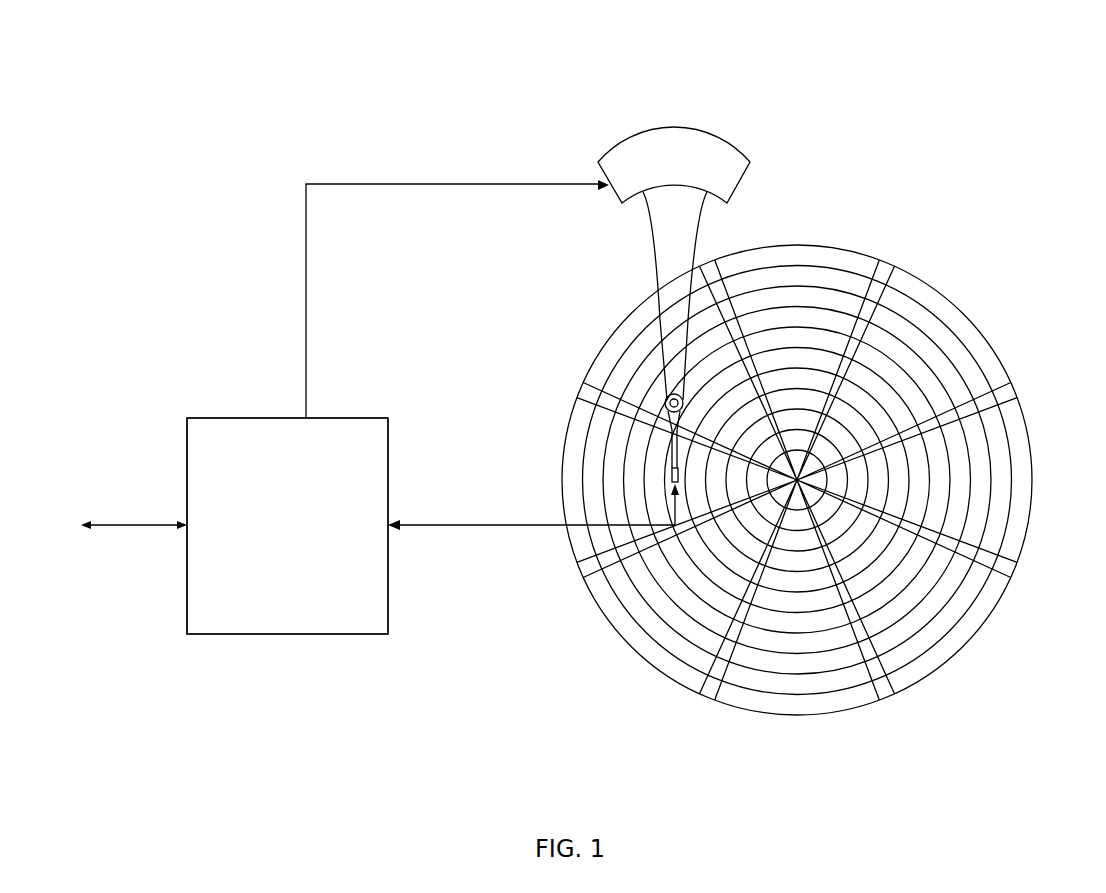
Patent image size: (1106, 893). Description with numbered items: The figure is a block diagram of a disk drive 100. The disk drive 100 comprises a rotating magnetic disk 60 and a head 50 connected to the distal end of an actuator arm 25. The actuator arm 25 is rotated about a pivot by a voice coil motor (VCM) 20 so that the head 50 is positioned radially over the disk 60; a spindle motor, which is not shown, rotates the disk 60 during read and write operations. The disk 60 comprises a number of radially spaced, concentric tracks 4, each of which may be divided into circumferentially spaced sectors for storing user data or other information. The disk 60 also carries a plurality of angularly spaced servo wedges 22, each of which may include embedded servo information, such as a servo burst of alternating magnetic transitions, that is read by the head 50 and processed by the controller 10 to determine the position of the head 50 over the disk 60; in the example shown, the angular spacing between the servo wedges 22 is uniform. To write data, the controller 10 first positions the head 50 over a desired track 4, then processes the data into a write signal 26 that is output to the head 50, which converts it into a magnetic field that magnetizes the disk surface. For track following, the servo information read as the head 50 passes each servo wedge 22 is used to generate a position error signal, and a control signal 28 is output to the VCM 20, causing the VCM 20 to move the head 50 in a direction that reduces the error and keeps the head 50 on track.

The disk drive 100 is at (1031, 65).
The track 4 is at (797, 280).
The controller 10 is at (372, 418).
The voice coil motor 20 is at (616, 196).
The servo wedges 22 is at (812, 488).
The actuator arm 25 is at (657, 277).
The write signal 26 is at (483, 527).
The control signal 28 is at (306, 263).
The head 50 is at (666, 487).
The disk 60 is at (959, 297).